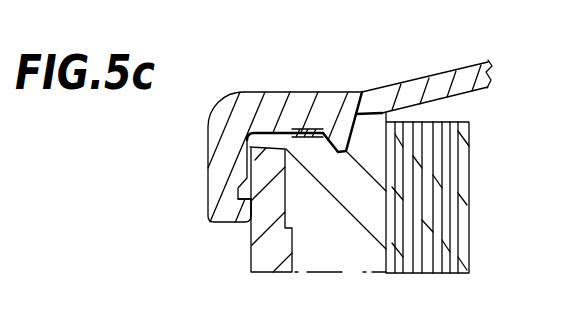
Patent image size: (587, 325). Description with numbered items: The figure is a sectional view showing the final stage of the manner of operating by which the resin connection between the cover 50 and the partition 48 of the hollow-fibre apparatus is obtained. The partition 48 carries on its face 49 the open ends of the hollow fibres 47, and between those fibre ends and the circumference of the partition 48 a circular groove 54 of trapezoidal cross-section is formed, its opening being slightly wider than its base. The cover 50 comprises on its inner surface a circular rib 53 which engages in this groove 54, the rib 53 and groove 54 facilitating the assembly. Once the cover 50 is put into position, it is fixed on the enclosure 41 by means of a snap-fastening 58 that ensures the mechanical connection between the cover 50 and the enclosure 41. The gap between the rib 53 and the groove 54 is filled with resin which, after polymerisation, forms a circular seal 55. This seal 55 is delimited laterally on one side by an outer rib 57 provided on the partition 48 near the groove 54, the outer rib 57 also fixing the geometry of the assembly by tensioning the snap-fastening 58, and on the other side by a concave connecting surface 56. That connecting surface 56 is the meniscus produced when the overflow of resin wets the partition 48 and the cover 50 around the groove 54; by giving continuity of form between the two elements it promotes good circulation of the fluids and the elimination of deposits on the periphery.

The enclosure 41 is at (263, 233).
The hollow fibres 47 is at (432, 193).
The partition 48 is at (369, 250).
The face 49 is at (455, 121).
The cover 50 is at (247, 98).
The circular rib 53 is at (345, 137).
The circular groove 54 is at (328, 152).
The circular seal 55 is at (250, 147).
The connecting surface 56 is at (395, 108).
The outer rib 57 is at (323, 128).
The snap-fastening 58 is at (238, 199).